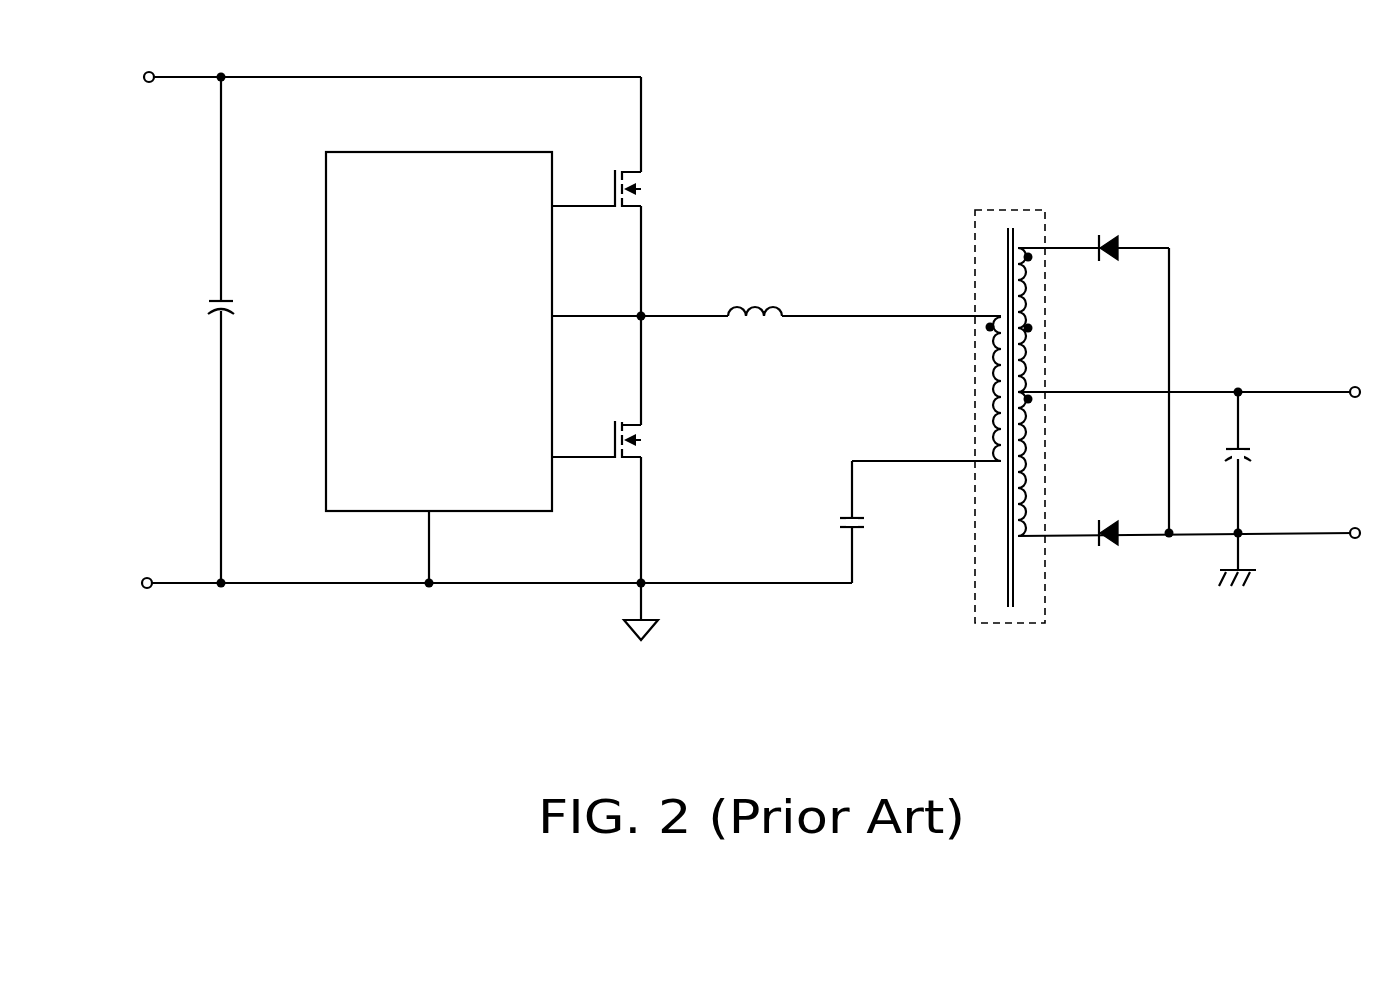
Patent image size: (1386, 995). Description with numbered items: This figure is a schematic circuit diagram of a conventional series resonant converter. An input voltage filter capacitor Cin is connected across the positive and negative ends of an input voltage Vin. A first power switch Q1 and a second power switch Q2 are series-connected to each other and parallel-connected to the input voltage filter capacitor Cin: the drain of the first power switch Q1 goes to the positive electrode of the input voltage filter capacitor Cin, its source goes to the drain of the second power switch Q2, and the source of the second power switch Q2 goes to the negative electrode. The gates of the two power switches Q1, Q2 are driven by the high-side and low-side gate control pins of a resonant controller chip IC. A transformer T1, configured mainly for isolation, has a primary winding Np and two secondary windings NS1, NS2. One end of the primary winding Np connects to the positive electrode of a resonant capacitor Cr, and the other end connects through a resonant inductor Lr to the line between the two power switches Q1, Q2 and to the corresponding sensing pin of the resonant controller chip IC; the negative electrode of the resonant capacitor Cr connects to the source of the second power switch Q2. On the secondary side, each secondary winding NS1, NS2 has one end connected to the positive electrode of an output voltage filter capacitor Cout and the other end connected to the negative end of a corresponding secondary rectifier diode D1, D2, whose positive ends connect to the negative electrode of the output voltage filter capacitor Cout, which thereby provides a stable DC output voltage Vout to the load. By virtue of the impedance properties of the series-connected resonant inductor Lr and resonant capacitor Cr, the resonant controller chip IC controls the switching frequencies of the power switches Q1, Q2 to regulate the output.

The input voltage Vin is at (149, 92).
The input voltage filter capacitor Cin is at (240, 330).
The resonant controller chip IC is at (439, 331).
The first power switch Q1 is at (616, 188).
The second power switch Q2 is at (616, 439).
The resonant inductor Lr is at (755, 299).
The resonant capacitor Cr is at (865, 523).
The transformer T1 is at (1010, 402).
The primary winding Np is at (987, 385).
The secondary winding NS1 is at (1054, 320).
The secondary winding NS2 is at (1054, 464).
The secondary rectifier diode D1 is at (1109, 231).
The secondary rectifier diode D2 is at (1107, 516).
The output voltage filter capacitor Cout is at (1263, 458).
The output voltage Vout is at (1355, 520).